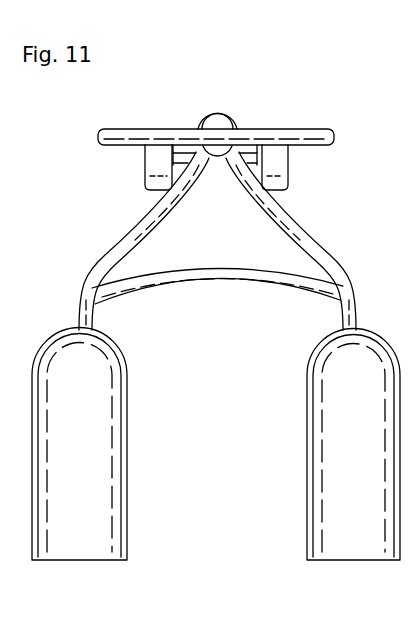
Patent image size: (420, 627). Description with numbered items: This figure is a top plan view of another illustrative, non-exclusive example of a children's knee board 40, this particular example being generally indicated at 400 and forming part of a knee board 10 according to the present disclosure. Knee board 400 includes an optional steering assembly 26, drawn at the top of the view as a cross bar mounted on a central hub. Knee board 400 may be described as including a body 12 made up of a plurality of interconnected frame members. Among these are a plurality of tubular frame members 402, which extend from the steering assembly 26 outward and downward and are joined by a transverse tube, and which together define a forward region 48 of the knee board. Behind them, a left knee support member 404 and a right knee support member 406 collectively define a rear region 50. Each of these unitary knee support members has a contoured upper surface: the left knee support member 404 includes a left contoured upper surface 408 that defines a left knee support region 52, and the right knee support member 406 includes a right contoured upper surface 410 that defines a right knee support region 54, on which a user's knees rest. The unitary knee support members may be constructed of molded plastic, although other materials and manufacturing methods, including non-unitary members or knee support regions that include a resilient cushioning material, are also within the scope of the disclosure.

The securement device 10 is at (356, 69).
The body 12 is at (79, 211).
The steering assembly 26 is at (307, 152).
The knee board 40 is at (322, 81).
The forward region 48 is at (89, 265).
The rear region 50 is at (405, 378).
The left knee support region 52 is at (83, 548).
The right knee support region 54 is at (348, 550).
The knee board 400 is at (297, 72).
The tubular frame members 402 is at (262, 229).
The left knee support member 404 is at (128, 481).
The right knee support member 406 is at (306, 481).
The left contoured upper surface 408 is at (98, 481).
The right contoured upper surface 410 is at (375, 480).